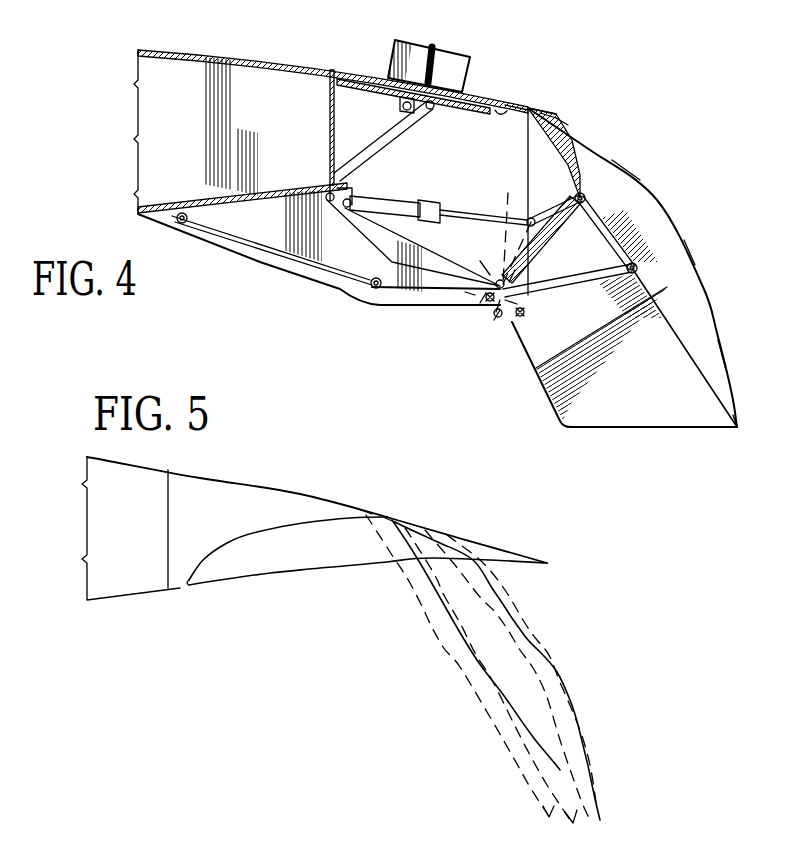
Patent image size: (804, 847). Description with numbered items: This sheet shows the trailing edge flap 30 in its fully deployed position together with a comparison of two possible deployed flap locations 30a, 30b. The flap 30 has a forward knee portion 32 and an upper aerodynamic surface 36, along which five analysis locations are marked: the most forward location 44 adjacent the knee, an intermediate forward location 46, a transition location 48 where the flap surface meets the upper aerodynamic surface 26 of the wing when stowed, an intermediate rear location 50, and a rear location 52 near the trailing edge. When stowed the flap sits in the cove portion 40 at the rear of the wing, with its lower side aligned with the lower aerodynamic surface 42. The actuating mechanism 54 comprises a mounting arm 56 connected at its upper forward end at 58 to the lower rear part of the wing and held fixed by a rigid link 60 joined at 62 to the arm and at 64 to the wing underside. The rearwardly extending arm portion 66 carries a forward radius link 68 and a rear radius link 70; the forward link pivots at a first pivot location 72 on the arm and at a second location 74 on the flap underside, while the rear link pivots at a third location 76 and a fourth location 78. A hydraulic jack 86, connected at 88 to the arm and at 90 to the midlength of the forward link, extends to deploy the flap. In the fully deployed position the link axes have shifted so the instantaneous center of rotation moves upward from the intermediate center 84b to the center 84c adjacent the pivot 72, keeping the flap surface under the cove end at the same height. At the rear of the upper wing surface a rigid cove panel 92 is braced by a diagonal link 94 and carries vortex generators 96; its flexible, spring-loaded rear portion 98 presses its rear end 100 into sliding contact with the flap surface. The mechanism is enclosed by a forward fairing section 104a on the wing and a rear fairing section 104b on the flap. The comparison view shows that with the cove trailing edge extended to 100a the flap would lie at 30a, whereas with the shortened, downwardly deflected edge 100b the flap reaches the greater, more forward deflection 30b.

In FIG. 4, the upper aerodynamic surface of the wing 26 is at (232, 55).
In FIG. 4, the flap 30 is at (720, 373).
In FIG. 5, the flap 30 is at (337, 560).
In FIG. 5, the flap location with extended cove trailing edge 30a is at (563, 690).
In FIG. 5, the flap location with shortened cove trailing edge 30b is at (523, 733).
In FIG. 4, the forward knee portion 32 is at (563, 117).
In FIG. 4, the upper aerodynamic surface of the flap 36 is at (700, 283).
In FIG. 4, the cove portion 40 is at (511, 107).
In FIG. 4, the lower aerodynamic surface of the wing 42 is at (245, 203).
In FIG. 4, the most forward location 44 is at (550, 113).
In FIG. 4, the intermediate forward location 46 is at (628, 168).
In FIG. 4, the transition location 48 is at (688, 250).
In FIG. 4, the intermediate rear location 50 is at (722, 356).
In FIG. 4, the rear location 52 is at (740, 423).
In FIG. 4, the actuating mechanism 54 is at (442, 294).
In FIG. 4, the mounting arm 56 is at (317, 282).
In FIG. 4, the upper forward connection of the mounting arm 58 is at (325, 183).
In FIG. 4, the rigid link 60 is at (283, 253).
In FIG. 4, the rear end connection of the rigid link 62 is at (372, 286).
In FIG. 4, the forward end connection of the rigid link 64 is at (180, 225).
In FIG. 4, the rearwardly extending arm portion 66 is at (400, 308).
In FIG. 4, the forward radius link 68 is at (553, 213).
In FIG. 4, the rear radius link 70 is at (598, 282).
In FIG. 4, the first forward pivot location 72 is at (495, 285).
In FIG. 4, the second pivot location 74 is at (590, 198).
In FIG. 4, the third pivot location 76 is at (526, 310).
In FIG. 4, the fourth pivot location 78 is at (640, 268).
In FIG. 4, the instantaneous center of rotation in intermediate position 84b is at (477, 395).
In FIG. 4, the instantaneous center of rotation in fully deployed position 84c is at (493, 310).
In FIG. 4, the hydraulic jack 86 is at (400, 213).
In FIG. 4, the forward end connection of the hydraulic jack 88 is at (357, 197).
In FIG. 4, the rear end connection of the hydraulic jack 90 is at (512, 205).
In FIG. 4, the cove panel 92 is at (371, 72).
In FIG. 4, the diagonal link 94 is at (383, 130).
In FIG. 4, the vortex generator 96 is at (452, 57).
In FIG. 4, the rear portion of the cove panel 98 is at (521, 107).
In FIG. 4, the rear end of the cove portion 100 is at (527, 110).
In FIG. 5, the extended cove trailing edge location 100a is at (385, 518).
In FIG. 5, the shortened and downwardly deflected cove trailing edge 100b is at (362, 512).
In FIG. 4, the forward fairing section 104a is at (407, 300).
In FIG. 4, the rear fairing section 104b is at (630, 420).